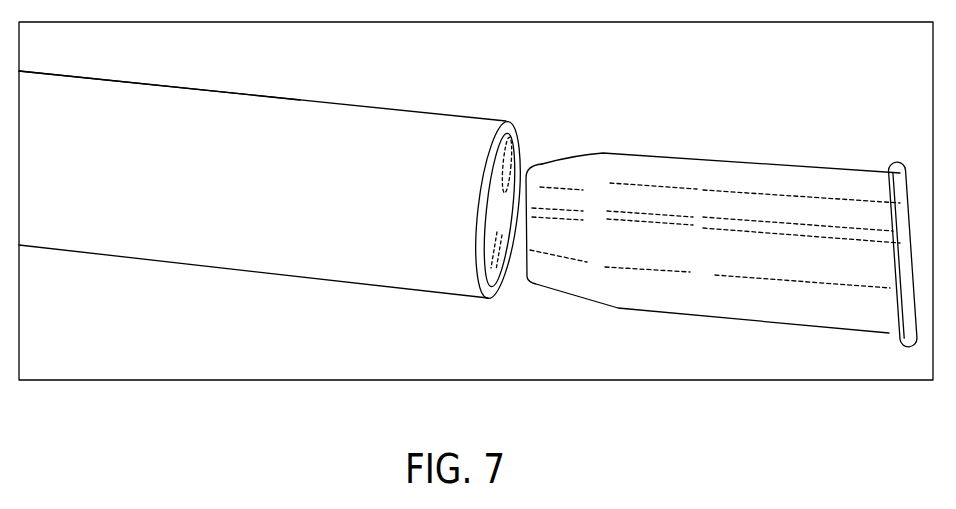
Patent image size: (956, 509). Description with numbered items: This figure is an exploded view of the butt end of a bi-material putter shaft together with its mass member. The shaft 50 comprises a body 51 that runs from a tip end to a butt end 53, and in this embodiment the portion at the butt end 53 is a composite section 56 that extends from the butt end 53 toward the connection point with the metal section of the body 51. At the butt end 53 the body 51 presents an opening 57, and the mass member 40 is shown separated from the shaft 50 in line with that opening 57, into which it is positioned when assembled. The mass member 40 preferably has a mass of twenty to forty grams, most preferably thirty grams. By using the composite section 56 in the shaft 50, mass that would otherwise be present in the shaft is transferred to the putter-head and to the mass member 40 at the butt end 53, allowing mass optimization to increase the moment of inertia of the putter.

The mass member 40 is at (738, 114).
The bi-material shaft 50 is at (336, 77).
The body 51 is at (94, 78).
The butt end 53 is at (529, 110).
The composite section 56 is at (428, 120).
The opening 57 is at (507, 197).